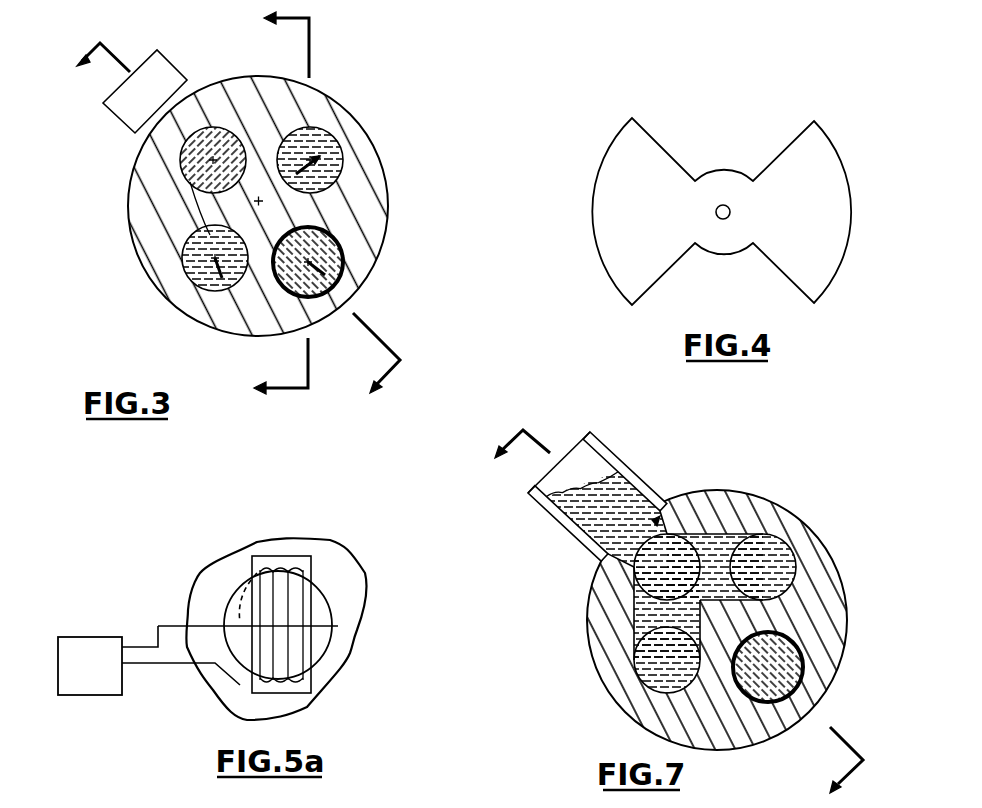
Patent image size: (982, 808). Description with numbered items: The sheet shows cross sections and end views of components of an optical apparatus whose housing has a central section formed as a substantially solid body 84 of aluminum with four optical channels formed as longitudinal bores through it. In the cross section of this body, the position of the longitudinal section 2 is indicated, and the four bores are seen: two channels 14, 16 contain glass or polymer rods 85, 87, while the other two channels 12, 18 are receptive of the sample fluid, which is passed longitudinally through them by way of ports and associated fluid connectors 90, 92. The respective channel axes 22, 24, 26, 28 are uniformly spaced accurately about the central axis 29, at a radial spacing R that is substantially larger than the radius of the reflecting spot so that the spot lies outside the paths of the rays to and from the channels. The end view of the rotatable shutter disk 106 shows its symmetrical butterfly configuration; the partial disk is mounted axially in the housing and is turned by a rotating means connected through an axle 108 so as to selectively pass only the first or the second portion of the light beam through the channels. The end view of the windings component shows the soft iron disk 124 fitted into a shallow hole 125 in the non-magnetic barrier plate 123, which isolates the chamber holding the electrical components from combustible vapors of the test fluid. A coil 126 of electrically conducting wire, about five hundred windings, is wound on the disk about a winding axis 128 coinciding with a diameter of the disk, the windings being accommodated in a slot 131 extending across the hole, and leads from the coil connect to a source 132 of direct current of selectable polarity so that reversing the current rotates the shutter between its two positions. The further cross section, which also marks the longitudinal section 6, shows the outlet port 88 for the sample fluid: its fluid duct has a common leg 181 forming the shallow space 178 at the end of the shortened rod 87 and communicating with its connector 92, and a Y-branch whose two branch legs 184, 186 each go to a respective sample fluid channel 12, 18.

In FIG. 3, the longitudinal section 2— 2 is at (281, 210).
In FIG. 3, the longitudinal section 6— 6 is at (240, 212).
In FIG. 7, the longitudinal section 6— 6 is at (682, 605).
In FIG. 3, the sample channel 12 is at (345, 150).
In FIG. 7, the sample channel 12 is at (800, 566).
In FIG. 3, the reference channel 14 is at (345, 263).
In FIG. 7, the reference channel 14 is at (800, 675).
In FIG. 3, the second reference channel 16 is at (183, 167).
In FIG. 3, the sample fluid channel 18 is at (188, 275).
In FIG. 7, the sample fluid channel 18 is at (643, 694).
In FIG. 3, the channel axis 22 is at (337, 173).
In FIG. 3, the channel axis 24 is at (347, 290).
In FIG. 3, the channel axis 26 is at (190, 195).
In FIG. 3, the channel axis 28 is at (205, 293).
In FIG. 3, the central axis 29 is at (259, 215).
In FIG. 3, the solid body 84 is at (337, 112).
In FIG. 3, the rod 85 is at (340, 237).
In FIG. 7, the rod 85 is at (797, 651).
In FIG. 3, the rod 87 is at (195, 183).
In FIG. 3, the fluid connector 90 is at (173, 64).
In FIG. 7, the fluid connector 92 is at (606, 447).
In FIG. 7, the outlet port 88 is at (682, 521).
In FIG. 4, the shutter disk 106 is at (785, 168).
In FIG. 4, the axle 108 is at (728, 219).
In FIG. 5a, the non-magnetic barrier plate 123 is at (347, 643).
In FIG. 5a, the disk 124 is at (247, 653).
In FIG. 5a, the shallow hole 125 is at (334, 610).
In FIG. 5a, the coil 126 is at (310, 593).
In FIG. 5a, the winding axis 128 is at (240, 620).
In FIG. 5a, the slot 131 is at (303, 672).
In FIG. 5a, the source of direct current 132 is at (100, 636).
In FIG. 7, the shallow space 178 is at (670, 562).
In FIG. 7, the common leg 181 is at (640, 583).
In FIG. 7, the branch leg 184 is at (730, 541).
In FIG. 7, the branch leg 186 is at (647, 625).